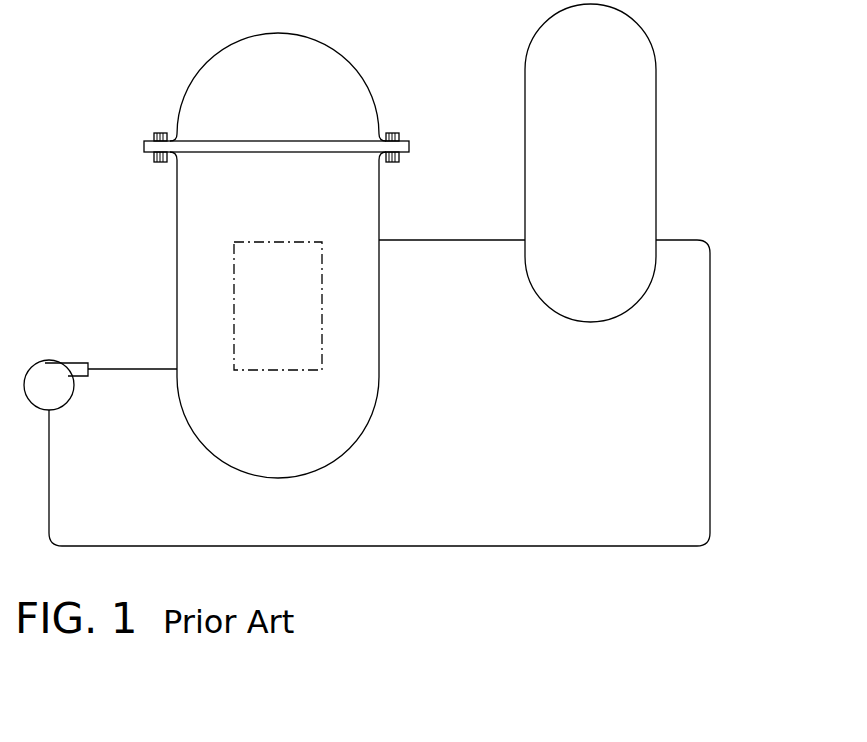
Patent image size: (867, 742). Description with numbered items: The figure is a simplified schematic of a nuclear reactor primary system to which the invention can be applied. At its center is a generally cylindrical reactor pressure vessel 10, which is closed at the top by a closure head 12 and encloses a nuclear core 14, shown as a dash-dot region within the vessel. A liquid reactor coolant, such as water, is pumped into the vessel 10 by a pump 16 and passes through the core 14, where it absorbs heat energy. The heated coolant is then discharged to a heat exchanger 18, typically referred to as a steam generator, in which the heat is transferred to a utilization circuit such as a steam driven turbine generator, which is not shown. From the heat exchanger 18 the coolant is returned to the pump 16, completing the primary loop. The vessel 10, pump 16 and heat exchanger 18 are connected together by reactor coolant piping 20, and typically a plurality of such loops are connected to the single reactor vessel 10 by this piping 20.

The reactor pressure vessel 10 is at (290, 318).
The closure head 12 is at (187, 91).
The nuclear core 14 is at (234, 295).
The pump 16 is at (45, 363).
The heat exchanger 18 is at (657, 105).
The reactor coolant piping 20 is at (712, 480).